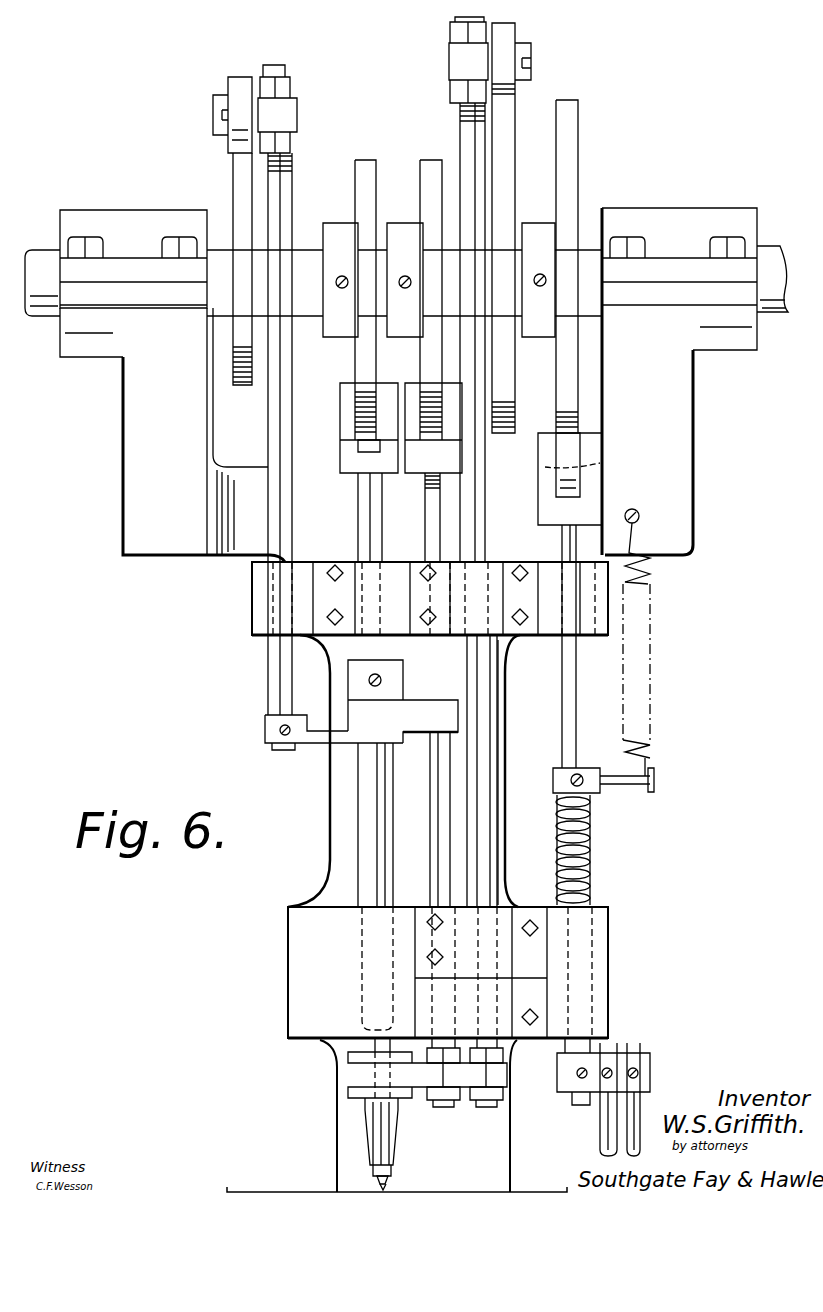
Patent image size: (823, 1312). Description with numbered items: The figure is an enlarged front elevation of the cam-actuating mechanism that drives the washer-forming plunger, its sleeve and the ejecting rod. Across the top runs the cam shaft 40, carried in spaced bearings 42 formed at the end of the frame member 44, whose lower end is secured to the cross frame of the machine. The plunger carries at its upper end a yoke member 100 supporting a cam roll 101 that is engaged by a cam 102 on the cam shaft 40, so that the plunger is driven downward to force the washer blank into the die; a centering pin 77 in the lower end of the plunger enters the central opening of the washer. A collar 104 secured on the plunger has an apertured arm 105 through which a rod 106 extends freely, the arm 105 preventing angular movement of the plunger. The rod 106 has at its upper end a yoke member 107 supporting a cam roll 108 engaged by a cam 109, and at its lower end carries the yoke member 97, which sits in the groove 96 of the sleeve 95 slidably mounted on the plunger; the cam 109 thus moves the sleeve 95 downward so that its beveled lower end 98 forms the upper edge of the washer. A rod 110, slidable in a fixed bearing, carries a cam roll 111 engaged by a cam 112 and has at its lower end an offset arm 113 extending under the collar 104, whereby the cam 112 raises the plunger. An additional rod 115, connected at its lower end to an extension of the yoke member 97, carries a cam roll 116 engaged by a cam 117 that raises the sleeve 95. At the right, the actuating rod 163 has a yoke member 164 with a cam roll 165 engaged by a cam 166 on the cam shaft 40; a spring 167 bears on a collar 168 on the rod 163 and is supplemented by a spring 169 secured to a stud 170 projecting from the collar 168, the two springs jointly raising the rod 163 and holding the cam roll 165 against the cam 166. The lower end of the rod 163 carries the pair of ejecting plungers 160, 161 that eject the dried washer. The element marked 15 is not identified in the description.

The cam shaft 40 is at (49, 254).
The spaced bearings 42 is at (112, 208).
The frame member 44 is at (333, 873).
The cam roll 111 is at (243, 84).
The cam 112 is at (240, 182).
The rod 110 is at (276, 418).
The cam 102 is at (356, 363).
The cam 109 is at (430, 363).
The yoke member 100 is at (343, 437).
The cam roll 101 is at (368, 432).
The cam roll 108 is at (437, 432).
The yoke member 107 is at (414, 472).
The additional rod 115 is at (462, 127).
The cam roll 116 is at (508, 28).
The cam 117 is at (508, 168).
The cam 166 is at (570, 390).
The cam roll 165 is at (562, 446).
The yoke member 164 is at (550, 505).
The actuating rod 163 is at (570, 738).
The collar 104 is at (408, 660).
The apertured arm 105 is at (438, 725).
The offset arm 113 is at (318, 740).
The rod 106 is at (437, 822).
The sleeve 95 is at (392, 1143).
The groove 96 is at (350, 1068).
The yoke member 97 is at (425, 1085).
The beveled lower end 98 is at (376, 1168).
The needle holder 15 is at (390, 1173).
The centering pin 77 is at (378, 1180).
The collar 168 is at (556, 777).
The stud 170 is at (622, 786).
The spring 169 is at (648, 718).
The spring 167 is at (590, 872).
The ejecting plunger 160 is at (640, 1110).
The ejecting plunger 161 is at (605, 1127).